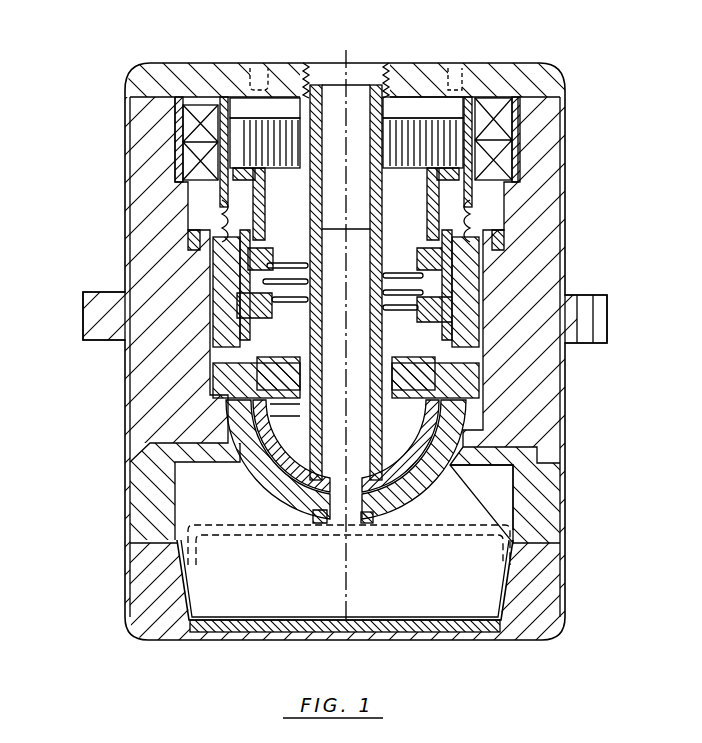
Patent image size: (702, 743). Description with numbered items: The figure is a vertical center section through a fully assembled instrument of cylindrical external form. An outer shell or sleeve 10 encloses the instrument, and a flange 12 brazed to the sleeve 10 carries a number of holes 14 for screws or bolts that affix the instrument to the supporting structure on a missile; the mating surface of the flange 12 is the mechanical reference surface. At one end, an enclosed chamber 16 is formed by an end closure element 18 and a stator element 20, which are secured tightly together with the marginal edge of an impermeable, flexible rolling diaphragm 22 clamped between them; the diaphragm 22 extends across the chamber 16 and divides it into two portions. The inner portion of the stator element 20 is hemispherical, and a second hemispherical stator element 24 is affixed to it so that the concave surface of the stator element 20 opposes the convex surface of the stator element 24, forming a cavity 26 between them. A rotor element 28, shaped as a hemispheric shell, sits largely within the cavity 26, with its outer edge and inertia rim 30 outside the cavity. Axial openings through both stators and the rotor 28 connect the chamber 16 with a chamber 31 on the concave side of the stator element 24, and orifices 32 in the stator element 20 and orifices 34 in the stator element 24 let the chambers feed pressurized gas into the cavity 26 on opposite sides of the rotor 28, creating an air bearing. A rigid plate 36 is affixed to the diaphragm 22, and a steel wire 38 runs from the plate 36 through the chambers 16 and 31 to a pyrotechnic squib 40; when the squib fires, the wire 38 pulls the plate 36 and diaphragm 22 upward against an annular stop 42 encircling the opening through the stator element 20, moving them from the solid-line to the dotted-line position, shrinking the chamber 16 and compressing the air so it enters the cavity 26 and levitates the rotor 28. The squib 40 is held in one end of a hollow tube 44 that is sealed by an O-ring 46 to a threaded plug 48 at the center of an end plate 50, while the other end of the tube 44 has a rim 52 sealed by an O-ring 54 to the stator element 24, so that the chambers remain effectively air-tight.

The outer shell or sleeve 10 is at (125, 212).
The flange 12 is at (97, 340).
The holes 14 is at (587, 302).
The chamber 16 is at (207, 488).
The end closure element 18 is at (543, 587).
The stator element 20 is at (550, 487).
The diaphragm 22 is at (193, 617).
The hemispherical stator element 24 is at (358, 468).
The cavity 26 is at (305, 480).
The rotor element 28 is at (450, 467).
The inertia rim 30 is at (480, 393).
The chamber 31 is at (290, 434).
The orifices 32 is at (280, 450).
The orifices 34 is at (292, 412).
The rigid plate 36 is at (438, 641).
The steel wire 38 is at (388, 243).
The pyrotechnic squib 40 is at (365, 104).
The annular stop 42 is at (373, 523).
The hollow tube 44 is at (297, 246).
The O-ring 46 is at (298, 78).
The threaded plug 48 is at (337, 67).
The end plate 50 is at (530, 70).
The rim 52 is at (388, 370).
The O-ring 54 is at (290, 372).